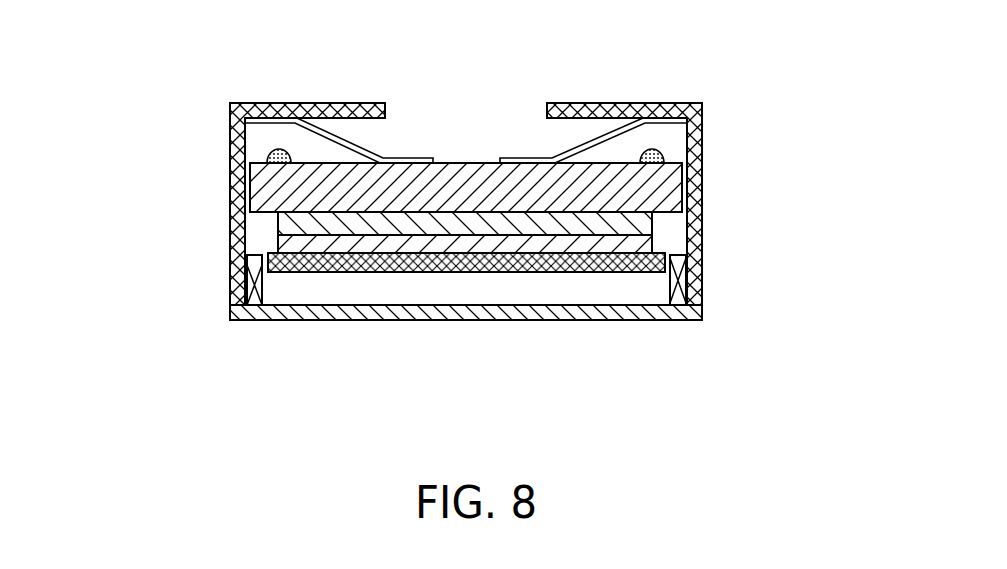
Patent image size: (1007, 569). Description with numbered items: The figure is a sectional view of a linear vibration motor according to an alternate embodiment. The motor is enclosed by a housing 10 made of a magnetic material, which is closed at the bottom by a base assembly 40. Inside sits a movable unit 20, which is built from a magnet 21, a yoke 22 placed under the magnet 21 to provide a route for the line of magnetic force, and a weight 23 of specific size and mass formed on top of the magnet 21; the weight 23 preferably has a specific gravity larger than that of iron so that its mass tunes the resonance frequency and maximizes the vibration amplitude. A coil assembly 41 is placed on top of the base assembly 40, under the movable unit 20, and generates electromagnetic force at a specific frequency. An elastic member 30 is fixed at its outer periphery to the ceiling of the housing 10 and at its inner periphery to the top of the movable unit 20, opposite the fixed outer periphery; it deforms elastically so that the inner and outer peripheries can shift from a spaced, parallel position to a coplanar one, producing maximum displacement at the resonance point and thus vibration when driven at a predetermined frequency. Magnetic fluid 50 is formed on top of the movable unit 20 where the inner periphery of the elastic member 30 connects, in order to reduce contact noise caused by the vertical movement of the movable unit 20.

The housing 10 is at (700, 108).
The movable unit 20 is at (125, 177).
The magnet 21 is at (278, 224).
The yoke 22 is at (270, 263).
The weight 23 is at (255, 193).
The elastic member 30 is at (690, 130).
The base assembly 40 is at (625, 307).
The coil assembly 41 is at (684, 275).
The magnetic fluid 50 is at (650, 150).